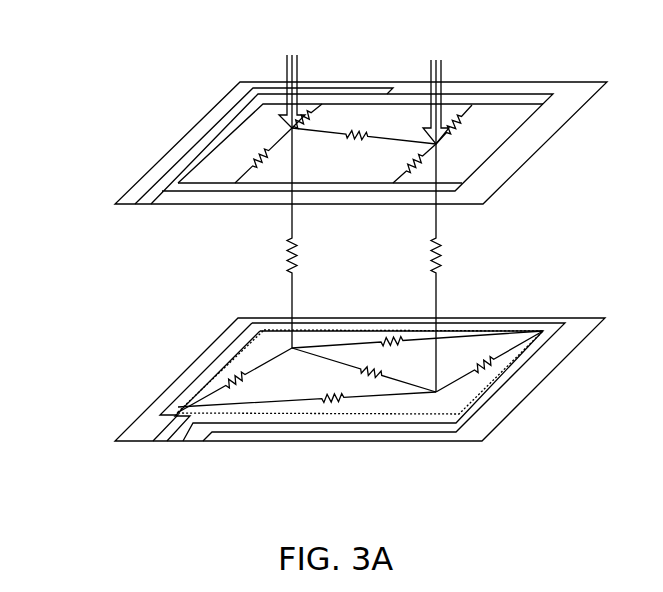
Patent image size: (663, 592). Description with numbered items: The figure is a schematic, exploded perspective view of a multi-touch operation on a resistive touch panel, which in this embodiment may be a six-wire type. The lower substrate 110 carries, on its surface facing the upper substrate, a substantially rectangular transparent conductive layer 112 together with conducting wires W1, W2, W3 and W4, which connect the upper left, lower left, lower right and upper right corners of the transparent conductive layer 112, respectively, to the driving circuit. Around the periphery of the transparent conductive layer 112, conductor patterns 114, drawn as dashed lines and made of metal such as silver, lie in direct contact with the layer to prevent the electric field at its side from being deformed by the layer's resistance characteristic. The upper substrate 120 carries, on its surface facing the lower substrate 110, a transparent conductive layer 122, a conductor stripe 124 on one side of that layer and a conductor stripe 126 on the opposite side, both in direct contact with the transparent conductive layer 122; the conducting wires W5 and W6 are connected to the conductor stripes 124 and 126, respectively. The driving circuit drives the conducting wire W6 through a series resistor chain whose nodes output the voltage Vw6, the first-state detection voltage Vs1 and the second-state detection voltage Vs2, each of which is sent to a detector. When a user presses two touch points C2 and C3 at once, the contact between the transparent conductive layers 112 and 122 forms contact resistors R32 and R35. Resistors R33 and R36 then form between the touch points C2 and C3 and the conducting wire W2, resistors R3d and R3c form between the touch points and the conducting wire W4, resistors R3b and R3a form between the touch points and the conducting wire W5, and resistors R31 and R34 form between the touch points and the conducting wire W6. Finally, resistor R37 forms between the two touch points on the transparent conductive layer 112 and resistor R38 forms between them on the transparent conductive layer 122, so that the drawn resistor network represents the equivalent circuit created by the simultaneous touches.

The substrate 110 is at (583, 318).
The transparent conductive layer 112 is at (493, 322).
The conductor patterns 114 is at (457, 331).
The substrate 120 is at (590, 83).
The transparent conductive layer 122 is at (516, 145).
The conductor stripe 124 is at (566, 103).
The conductor stripe 126 is at (466, 189).
The conducting wire W1 is at (207, 365).
The conducting wire W2 is at (167, 433).
The conducting wire W3 is at (200, 433).
The conducting wire W4 is at (225, 437).
The conducting wire W5 is at (197, 143).
The conducting wire W6 is at (240, 194).
The first-state detection voltage Vs1 is at (537, 95).
The second-state detection voltage Vs2 is at (540, 331).
The voltage Vw6 is at (411, 194).
The touch point C2 is at (292, 77).
The touch point C3 is at (436, 85).
The resistor R3a is at (470, 124).
The resistor R3b is at (319, 118).
The resistor R3c is at (489, 361).
The resistor R3d is at (417, 331).
The resistor R31 is at (271, 155).
The resistor R32 is at (316, 238).
The resistor R33 is at (234, 380).
The resistor R34 is at (430, 163).
The resistor R35 is at (459, 268).
The resistor R36 is at (307, 386).
The resistor R37 is at (364, 150).
The resistor R38 is at (364, 370).